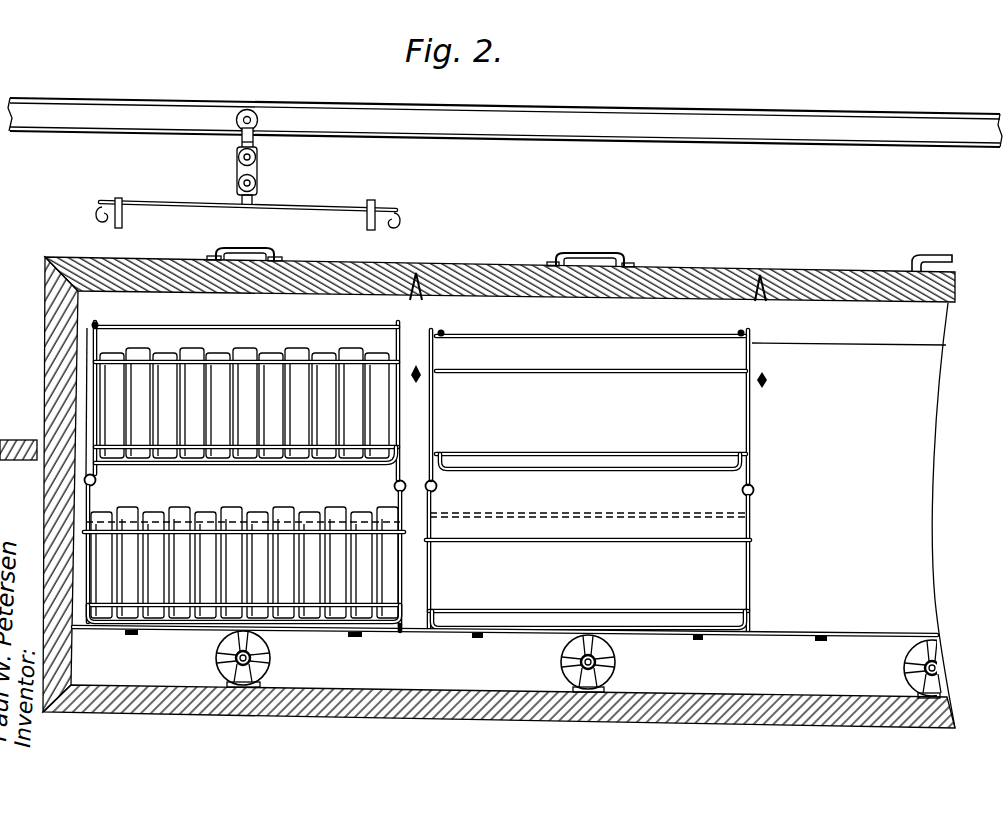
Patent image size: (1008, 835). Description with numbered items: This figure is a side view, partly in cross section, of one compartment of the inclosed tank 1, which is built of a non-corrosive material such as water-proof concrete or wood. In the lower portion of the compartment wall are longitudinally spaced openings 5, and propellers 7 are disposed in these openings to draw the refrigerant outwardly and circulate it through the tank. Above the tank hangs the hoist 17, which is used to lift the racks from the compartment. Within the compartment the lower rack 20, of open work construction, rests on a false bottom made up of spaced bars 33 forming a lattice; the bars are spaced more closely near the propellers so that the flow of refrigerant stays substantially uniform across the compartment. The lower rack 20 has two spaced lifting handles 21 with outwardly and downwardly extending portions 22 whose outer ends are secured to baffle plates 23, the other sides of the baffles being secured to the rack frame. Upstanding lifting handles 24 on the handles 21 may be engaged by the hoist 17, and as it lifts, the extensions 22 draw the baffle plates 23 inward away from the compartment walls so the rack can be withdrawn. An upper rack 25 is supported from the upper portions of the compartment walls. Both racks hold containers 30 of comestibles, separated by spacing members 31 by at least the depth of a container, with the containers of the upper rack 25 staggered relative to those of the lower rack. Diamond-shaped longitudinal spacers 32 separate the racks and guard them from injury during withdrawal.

The tank 1 is at (385, 698).
The opening 5 is at (255, 645).
The propeller 7 is at (262, 660).
The hoist 17 is at (304, 204).
The lower rack 20 is at (157, 628).
The lifting handle 21 is at (92, 500).
The extension 22 is at (80, 486).
The baffle plate 23 is at (262, 517).
The upstanding lifting handle 24 is at (86, 378).
The upper rack 25 is at (243, 358).
The container 30 is at (140, 350).
The spacing member 31 is at (168, 350).
The longitudinal spacer 32 is at (416, 366).
The bar 33 is at (415, 631).